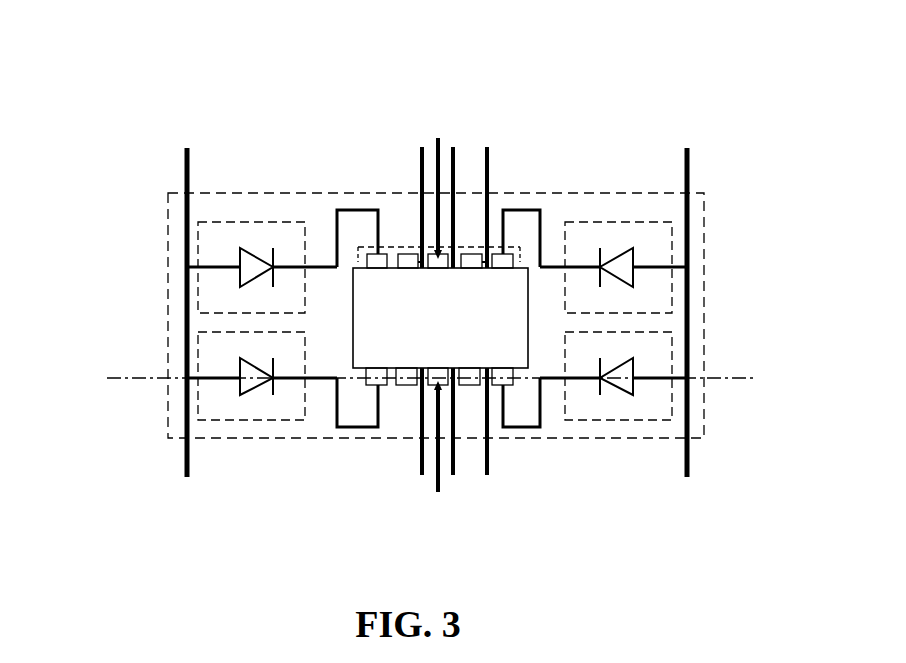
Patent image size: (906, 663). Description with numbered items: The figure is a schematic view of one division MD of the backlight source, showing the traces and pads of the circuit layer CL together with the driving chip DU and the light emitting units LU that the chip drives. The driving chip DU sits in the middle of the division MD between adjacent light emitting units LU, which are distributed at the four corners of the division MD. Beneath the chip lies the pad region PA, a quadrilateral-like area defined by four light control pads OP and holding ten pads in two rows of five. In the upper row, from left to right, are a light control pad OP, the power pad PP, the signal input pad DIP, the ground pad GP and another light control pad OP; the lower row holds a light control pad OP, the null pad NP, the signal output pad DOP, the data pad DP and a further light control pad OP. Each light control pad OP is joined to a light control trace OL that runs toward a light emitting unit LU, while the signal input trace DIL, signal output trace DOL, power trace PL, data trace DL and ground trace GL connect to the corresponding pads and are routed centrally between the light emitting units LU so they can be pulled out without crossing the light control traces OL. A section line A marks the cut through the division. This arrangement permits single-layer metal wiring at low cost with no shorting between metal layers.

The division MD is at (121, 112).
The circuit layer CL is at (265, 62).
The light control trace OL is at (336, 240).
The power trace PL is at (422, 142).
The signal input trace DIL is at (438, 132).
The data trace DL is at (453, 147).
The ground trace GL is at (487, 147).
The light control pad OP is at (377, 250).
The power pad PP is at (408, 254).
The signal input pad DIP is at (436, 254).
The ground pad GP is at (473, 250).
The light emitting unit LU is at (197, 245).
The driving chip DU is at (528, 322).
The pad region PA is at (374, 392).
The null pad NP is at (405, 392).
The signal output pad DOP is at (435, 390).
The signal output trace DOL is at (438, 492).
The data pad DP is at (466, 381).
The section line A- A is at (743, 385).